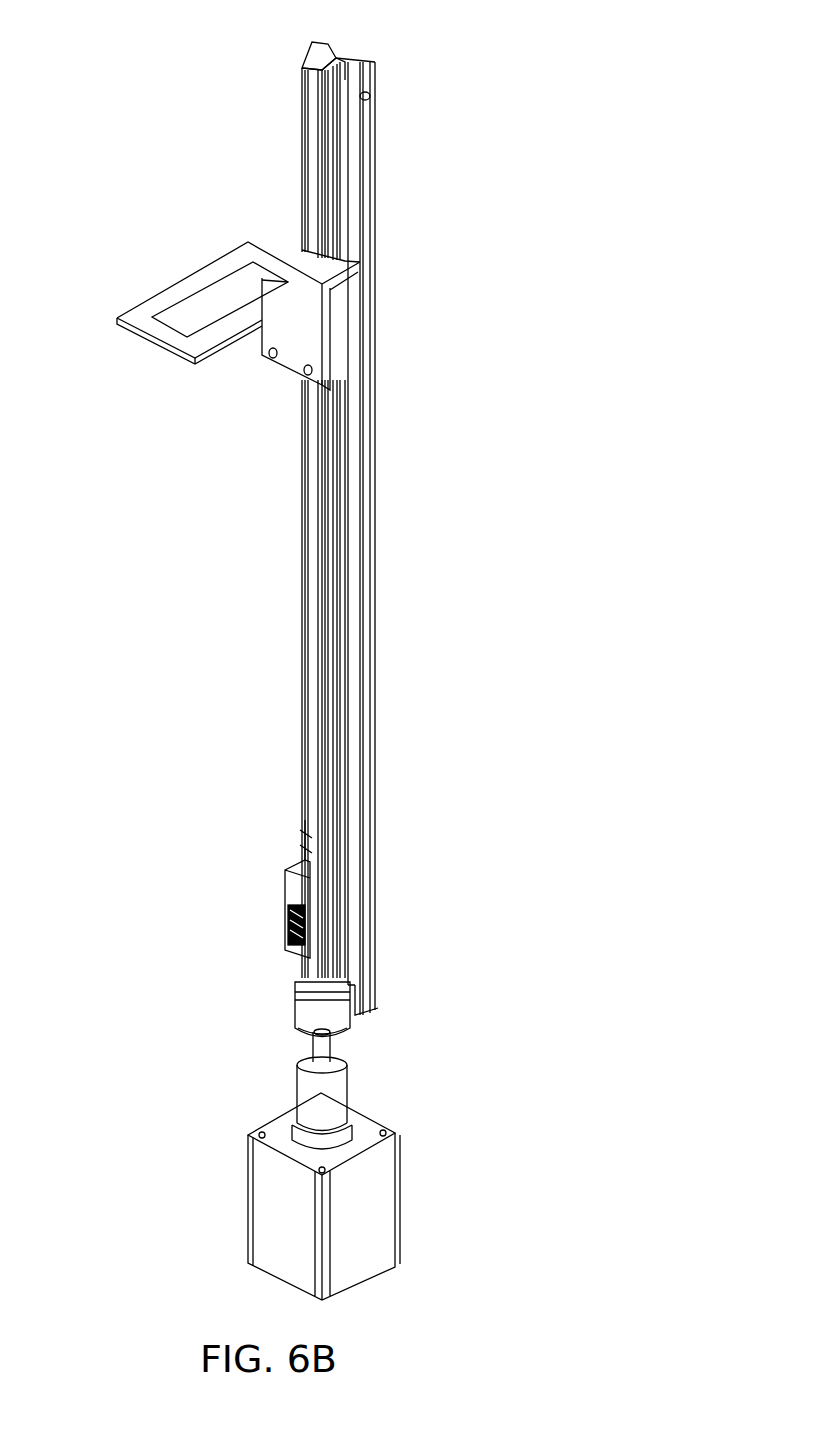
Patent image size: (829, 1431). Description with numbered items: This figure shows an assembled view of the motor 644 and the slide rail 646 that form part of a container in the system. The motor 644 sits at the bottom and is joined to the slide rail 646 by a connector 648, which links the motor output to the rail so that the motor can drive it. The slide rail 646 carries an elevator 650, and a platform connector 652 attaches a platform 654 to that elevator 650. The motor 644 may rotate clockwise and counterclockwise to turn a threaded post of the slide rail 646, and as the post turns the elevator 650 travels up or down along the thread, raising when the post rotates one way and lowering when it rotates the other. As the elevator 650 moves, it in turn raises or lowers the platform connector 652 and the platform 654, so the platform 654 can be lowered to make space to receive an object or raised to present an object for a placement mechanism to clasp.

The motor 644 is at (385, 1222).
The slide rail 646 is at (336, 60).
The connector 648 is at (340, 1100).
The elevator 650 is at (340, 346).
The platform connector 652 is at (297, 345).
The platform 654 is at (137, 318).